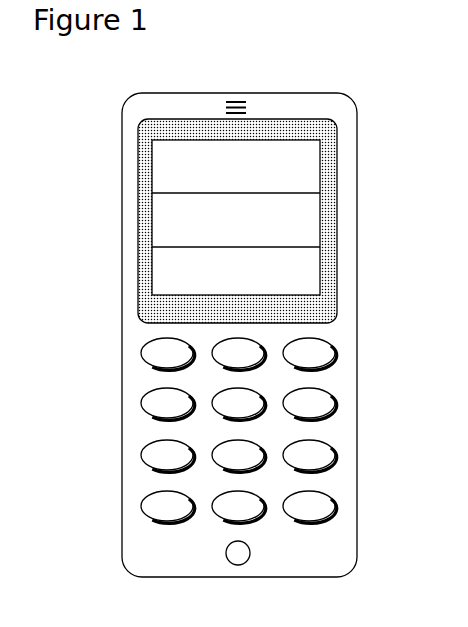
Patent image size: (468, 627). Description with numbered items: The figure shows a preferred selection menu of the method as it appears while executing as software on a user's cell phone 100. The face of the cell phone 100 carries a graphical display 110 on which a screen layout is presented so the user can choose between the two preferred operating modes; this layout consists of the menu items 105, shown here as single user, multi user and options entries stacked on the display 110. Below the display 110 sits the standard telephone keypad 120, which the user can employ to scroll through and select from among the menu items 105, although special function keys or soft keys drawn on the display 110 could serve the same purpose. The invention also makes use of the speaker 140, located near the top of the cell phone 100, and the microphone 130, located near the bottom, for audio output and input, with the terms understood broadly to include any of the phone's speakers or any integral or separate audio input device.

The cell phone 100 is at (367, 138).
The menu items 105 is at (152, 218).
The graphical display 110 is at (337, 258).
The telephone keypad 120 is at (366, 335).
The microphone 130 is at (236, 565).
The speaker 140 is at (235, 100).